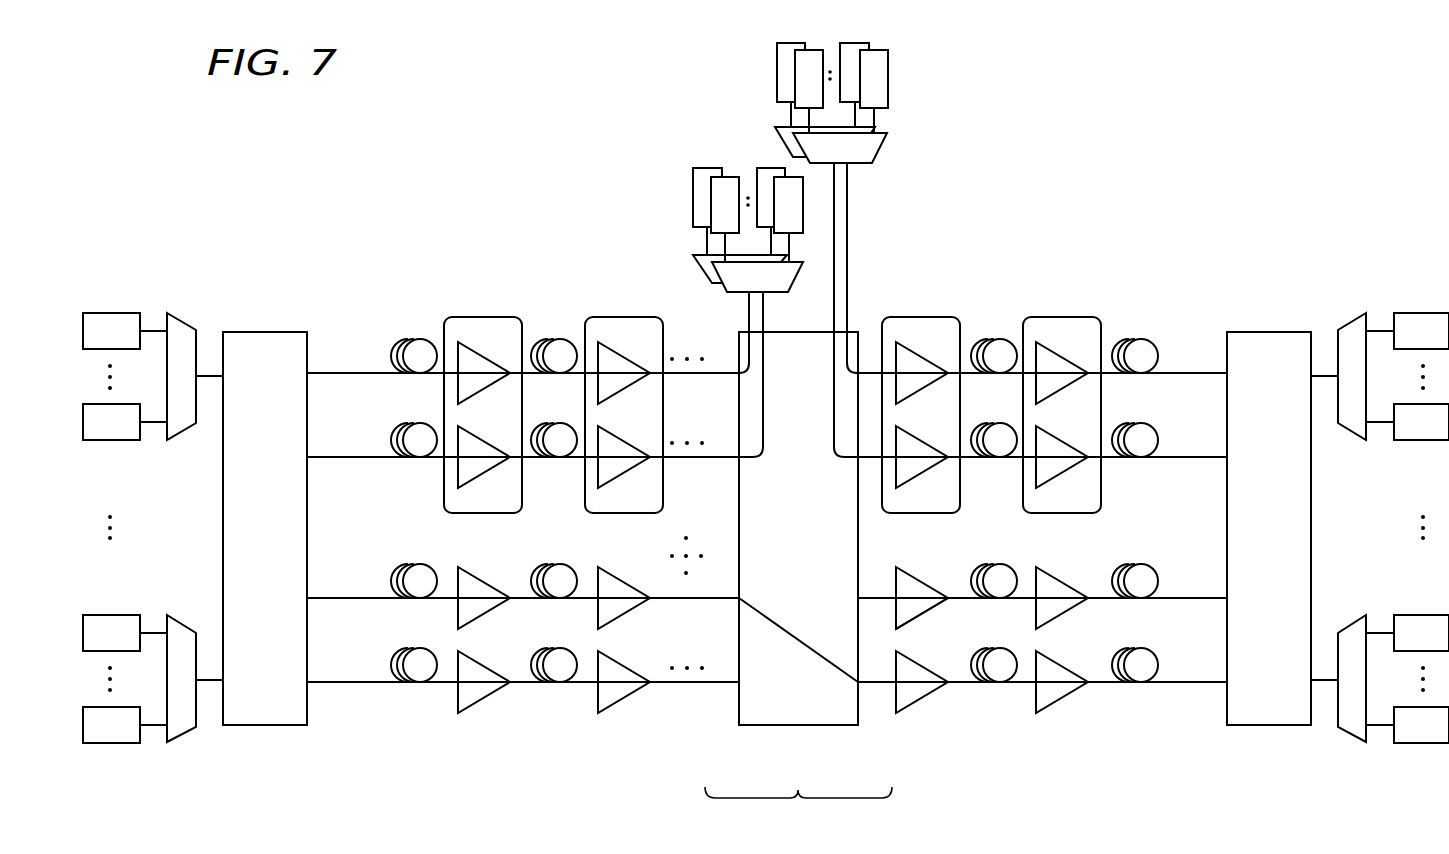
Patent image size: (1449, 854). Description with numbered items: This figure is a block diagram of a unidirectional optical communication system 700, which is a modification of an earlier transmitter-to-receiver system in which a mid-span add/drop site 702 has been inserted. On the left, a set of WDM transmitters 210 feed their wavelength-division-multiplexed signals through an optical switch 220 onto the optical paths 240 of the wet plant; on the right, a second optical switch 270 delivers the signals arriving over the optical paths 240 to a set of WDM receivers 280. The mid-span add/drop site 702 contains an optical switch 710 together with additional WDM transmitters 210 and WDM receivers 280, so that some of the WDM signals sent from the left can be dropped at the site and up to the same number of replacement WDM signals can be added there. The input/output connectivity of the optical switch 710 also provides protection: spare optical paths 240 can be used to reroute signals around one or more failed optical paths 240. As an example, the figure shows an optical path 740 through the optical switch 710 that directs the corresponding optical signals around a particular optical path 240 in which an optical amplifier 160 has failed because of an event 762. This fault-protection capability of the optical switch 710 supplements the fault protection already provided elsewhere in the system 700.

The unidirectional optical communication system 700 is at (285, 120).
The WDM transmitter 210 is at (957, 96).
The optical switch 220 is at (251, 332).
The optical switch 270 is at (1255, 332).
The WDM receiver 280 is at (633, 194).
The optical path 240 is at (880, 597).
The event 762 is at (912, 583).
The optical amplifier 160 is at (926, 612).
The optical path 740 is at (773, 619).
The optical switch 710 is at (795, 726).
The mid-span add/drop site 702 is at (798, 811).